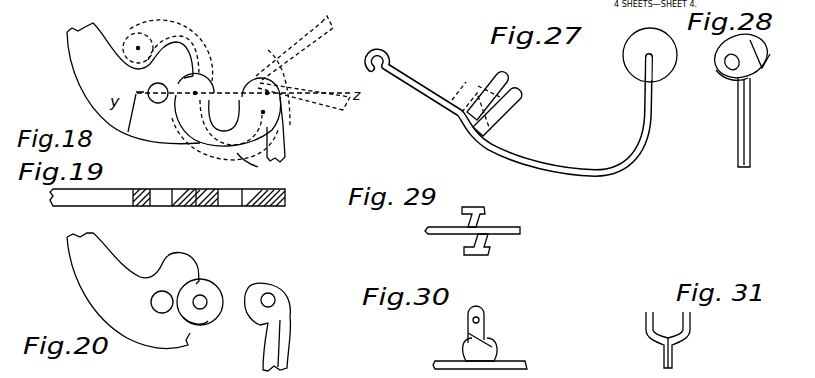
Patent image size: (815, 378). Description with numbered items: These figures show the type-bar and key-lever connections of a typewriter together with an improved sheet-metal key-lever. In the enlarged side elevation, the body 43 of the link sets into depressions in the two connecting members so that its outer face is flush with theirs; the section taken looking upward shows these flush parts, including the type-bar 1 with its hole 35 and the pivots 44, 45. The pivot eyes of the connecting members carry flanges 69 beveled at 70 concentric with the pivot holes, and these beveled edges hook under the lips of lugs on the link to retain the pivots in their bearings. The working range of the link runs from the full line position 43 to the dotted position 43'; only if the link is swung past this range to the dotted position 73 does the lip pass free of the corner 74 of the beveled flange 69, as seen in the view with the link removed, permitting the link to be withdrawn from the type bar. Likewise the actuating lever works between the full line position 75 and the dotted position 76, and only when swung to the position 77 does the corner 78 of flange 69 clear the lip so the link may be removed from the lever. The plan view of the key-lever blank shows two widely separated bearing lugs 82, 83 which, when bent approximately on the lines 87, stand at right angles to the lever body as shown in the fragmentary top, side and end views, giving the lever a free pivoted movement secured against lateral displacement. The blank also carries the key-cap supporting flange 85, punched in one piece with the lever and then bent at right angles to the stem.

In FIG. 18, the cam body 1 is at (133, 83).
In FIG. 20, the cam body 1 is at (133, 291).
In FIG. 18, the hole 35 is at (158, 102).
In FIG. 18, the body of the link 43 is at (225, 118).
In FIG. 19, the body of the link 43 is at (171, 185).
In FIG. 18, the dotted position of the link 43' is at (158, 48).
In FIG. 18, the pivot 44 is at (196, 92).
In FIG. 19, the pivot 44 is at (182, 206).
In FIG. 18, the pivot 45 is at (268, 94).
In FIG. 19, the pivot 45 is at (266, 208).
In FIG. 18, the flange 69 is at (249, 96).
In FIG. 19, the flange 69 is at (232, 186).
In FIG. 20, the flange 69 is at (238, 298).
In FIG. 19, the bevel 70 is at (228, 200).
In FIG. 18, the dotted position of the link 73 is at (258, 167).
In FIG. 20, the corner of beveled flange 74 is at (207, 323).
In FIG. 18, the full line position of the actuating lever 75 is at (286, 145).
In FIG. 18, the dotted position of the actuating lever 76 is at (317, 95).
In FIG. 18, the position of the actuating lever 77 is at (335, 33).
In FIG. 18, the corner of flange 78 is at (246, 80).
In FIG. 20, the corner of flange 78 is at (250, 296).
In FIG. 27, the bearing lug 82 is at (505, 73).
In FIG. 29, the bearing lug 82 is at (480, 207).
In FIG. 30, the bearing lug 82 is at (468, 339).
In FIG. 31, the bearing lug 82 is at (690, 322).
In FIG. 27, the bearing lug 83 is at (524, 93).
In FIG. 29, the bearing lug 83 is at (486, 255).
In FIG. 30, the bearing lug 83 is at (479, 318).
In FIG. 31, the bearing lug 83 is at (646, 322).
In FIG. 27, the key-cap supporting flange 85 is at (522, 100).
In FIG. 28, the key-cap supporting flange 85 is at (760, 45).
In FIG. 27, the bending lines 87 is at (487, 132).